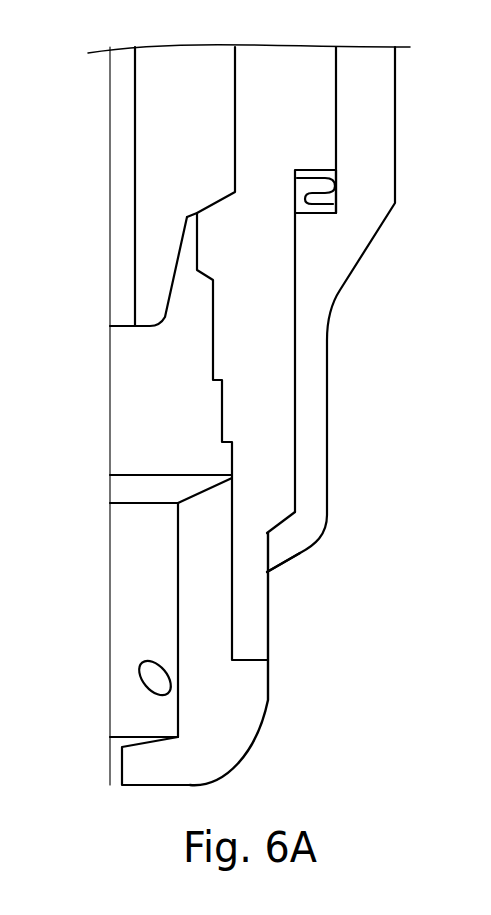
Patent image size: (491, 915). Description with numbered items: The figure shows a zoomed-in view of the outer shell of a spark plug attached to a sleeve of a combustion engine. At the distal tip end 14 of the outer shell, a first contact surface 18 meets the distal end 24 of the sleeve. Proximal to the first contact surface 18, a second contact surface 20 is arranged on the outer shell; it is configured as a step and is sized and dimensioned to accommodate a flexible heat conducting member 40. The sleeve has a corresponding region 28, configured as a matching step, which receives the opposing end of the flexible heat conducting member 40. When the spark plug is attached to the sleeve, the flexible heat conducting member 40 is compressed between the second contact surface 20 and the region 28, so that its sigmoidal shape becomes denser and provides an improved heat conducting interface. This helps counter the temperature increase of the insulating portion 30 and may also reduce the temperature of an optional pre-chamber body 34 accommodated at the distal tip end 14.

The distal tip end 14 is at (271, 637).
The first contact surface 18 is at (278, 513).
The second contact surface 20 is at (316, 158).
The distal end 24 is at (289, 568).
The region 28 is at (314, 220).
The insulating portion 30 is at (148, 170).
The pre-chamber body 34 is at (148, 608).
The flexible heat conducting member 40 is at (341, 187).